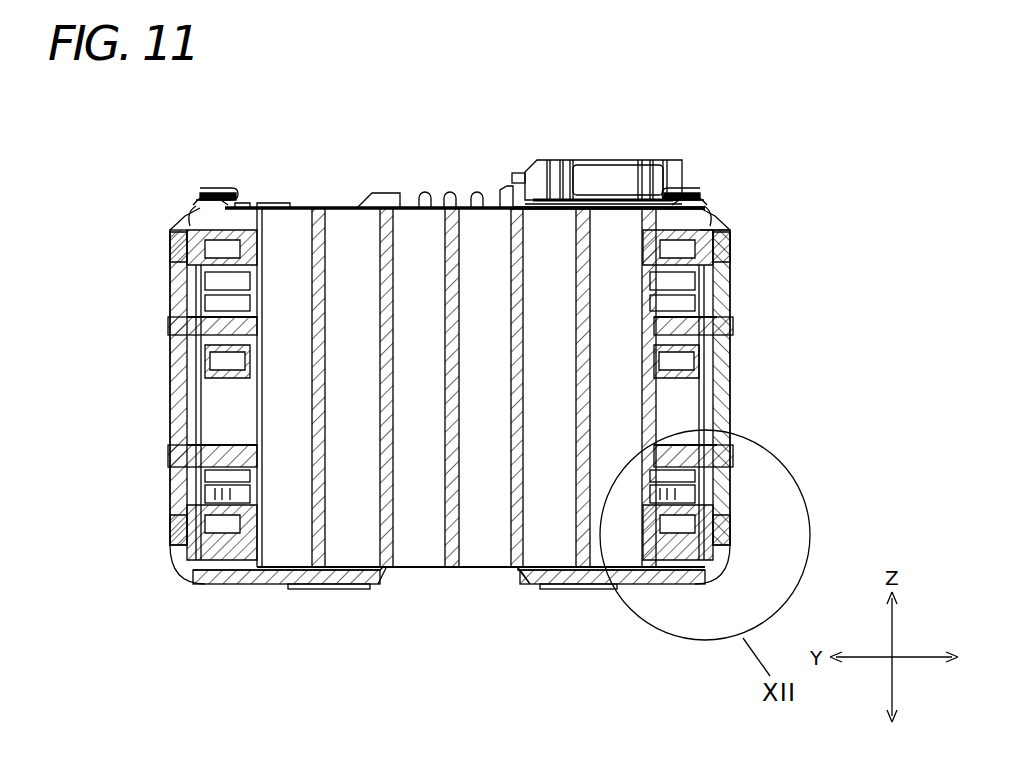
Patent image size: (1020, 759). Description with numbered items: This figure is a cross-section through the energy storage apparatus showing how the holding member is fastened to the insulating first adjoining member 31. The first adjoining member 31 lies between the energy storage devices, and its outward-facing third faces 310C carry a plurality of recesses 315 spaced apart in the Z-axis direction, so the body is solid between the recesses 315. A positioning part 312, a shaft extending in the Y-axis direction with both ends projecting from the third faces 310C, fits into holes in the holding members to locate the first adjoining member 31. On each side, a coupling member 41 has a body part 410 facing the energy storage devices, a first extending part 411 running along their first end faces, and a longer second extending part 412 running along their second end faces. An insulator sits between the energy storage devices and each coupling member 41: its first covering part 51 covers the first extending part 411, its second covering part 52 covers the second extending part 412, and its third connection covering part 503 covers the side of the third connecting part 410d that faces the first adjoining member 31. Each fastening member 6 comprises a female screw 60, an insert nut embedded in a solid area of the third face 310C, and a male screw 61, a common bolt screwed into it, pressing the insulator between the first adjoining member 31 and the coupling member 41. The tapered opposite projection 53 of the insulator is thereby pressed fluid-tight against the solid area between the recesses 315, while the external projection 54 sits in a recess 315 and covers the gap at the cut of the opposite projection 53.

The first adjoining member 31 is at (347, 200).
The coupling member 41 is at (195, 206).
The first extending part 411 is at (200, 190).
The second extending part 412 is at (322, 590).
The body part 410 is at (190, 352).
The third connecting part 410d is at (450, 412).
The first covering part 51 is at (212, 192).
The second covering part 52 is at (380, 587).
The opposite projection 53 is at (202, 588).
The external projection 54 is at (200, 492).
The fastening member 6 is at (113, 202).
The female screw 60 is at (198, 220).
The male screw 61 is at (195, 224).
The third connection covering part 503 is at (205, 286).
The positioning part 312 is at (175, 318).
The third face 310C is at (178, 338).
The recess 315 is at (200, 474).